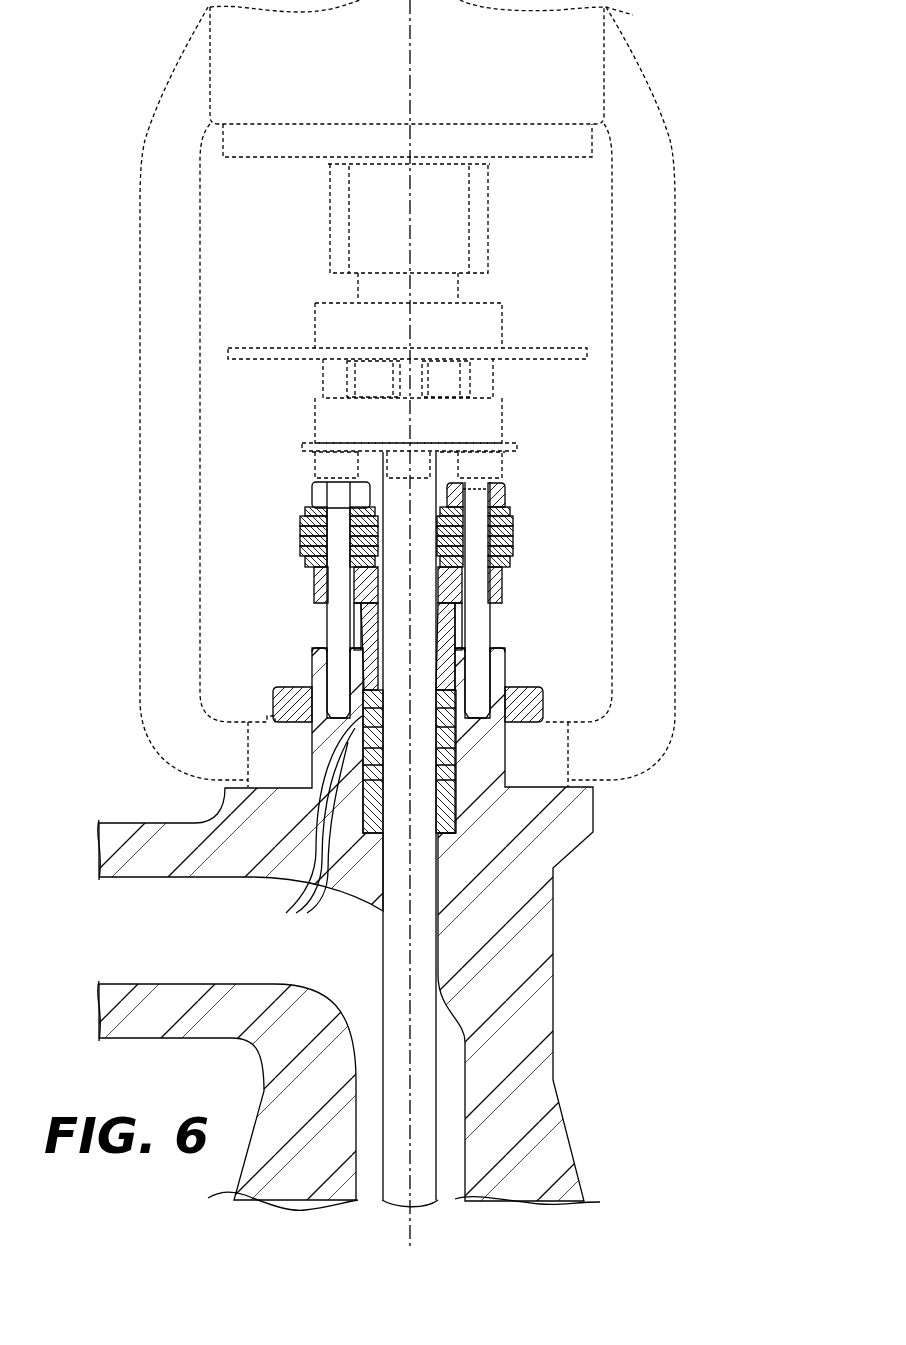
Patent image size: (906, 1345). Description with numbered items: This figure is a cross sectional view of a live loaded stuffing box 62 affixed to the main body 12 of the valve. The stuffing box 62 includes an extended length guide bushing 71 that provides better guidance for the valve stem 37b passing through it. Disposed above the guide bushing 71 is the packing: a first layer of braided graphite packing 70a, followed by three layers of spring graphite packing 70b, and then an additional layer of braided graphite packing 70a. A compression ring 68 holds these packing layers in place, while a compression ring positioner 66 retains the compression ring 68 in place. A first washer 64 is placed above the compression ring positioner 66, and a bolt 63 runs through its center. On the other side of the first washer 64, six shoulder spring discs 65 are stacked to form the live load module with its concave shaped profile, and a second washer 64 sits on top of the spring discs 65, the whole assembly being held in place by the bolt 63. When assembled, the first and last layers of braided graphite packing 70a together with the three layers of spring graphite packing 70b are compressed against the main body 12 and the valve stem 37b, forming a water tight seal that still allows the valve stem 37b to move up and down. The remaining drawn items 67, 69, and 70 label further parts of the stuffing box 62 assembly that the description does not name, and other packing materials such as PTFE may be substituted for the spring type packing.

The main body 12 is at (575, 1120).
The valve stem 37b is at (382, 473).
The stuffing box 62 is at (675, 162).
The bolt 63 is at (507, 485).
The washer 64 is at (508, 505).
The shoulder spring disc 65 is at (513, 538).
The compression ring positioner 66 is at (500, 580).
The spacer 67 is at (490, 617).
The compression ring 68 is at (455, 630).
The flange 69 is at (542, 707).
The mounting block 70 is at (455, 768).
The braided graphite packing 70a is at (363, 702).
The spring graphite packing 70b is at (317, 833).
The extended length guide bushing 71 is at (457, 810).